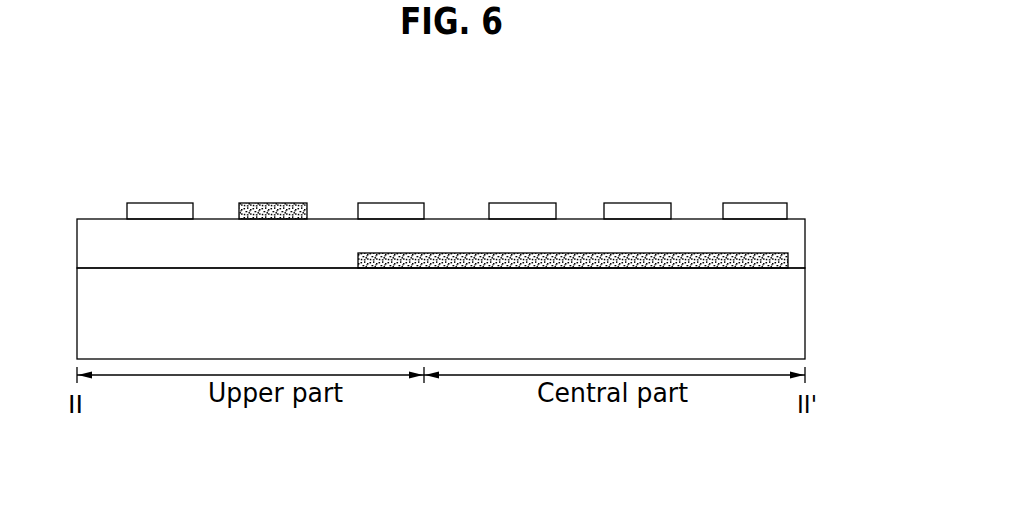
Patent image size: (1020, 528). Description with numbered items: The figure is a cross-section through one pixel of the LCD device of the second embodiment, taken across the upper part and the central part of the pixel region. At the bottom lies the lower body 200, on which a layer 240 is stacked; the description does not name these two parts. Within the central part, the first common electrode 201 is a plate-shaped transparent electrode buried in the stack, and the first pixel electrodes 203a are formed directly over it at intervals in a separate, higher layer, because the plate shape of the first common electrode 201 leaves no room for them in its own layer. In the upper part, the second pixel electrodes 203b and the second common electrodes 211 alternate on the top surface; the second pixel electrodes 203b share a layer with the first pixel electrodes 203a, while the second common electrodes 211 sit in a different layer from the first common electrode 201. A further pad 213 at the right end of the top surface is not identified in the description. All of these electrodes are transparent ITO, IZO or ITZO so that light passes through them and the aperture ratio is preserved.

The substrate 200 is at (795, 325).
The insulating layer 240 is at (795, 240).
The first common electrode 201 is at (557, 268).
The first pixel electrodes 203a is at (523, 210).
The second pixel electrodes 203b is at (161, 210).
The second common electrodes 211 is at (272, 211).
The pad electrode 213 is at (757, 212).